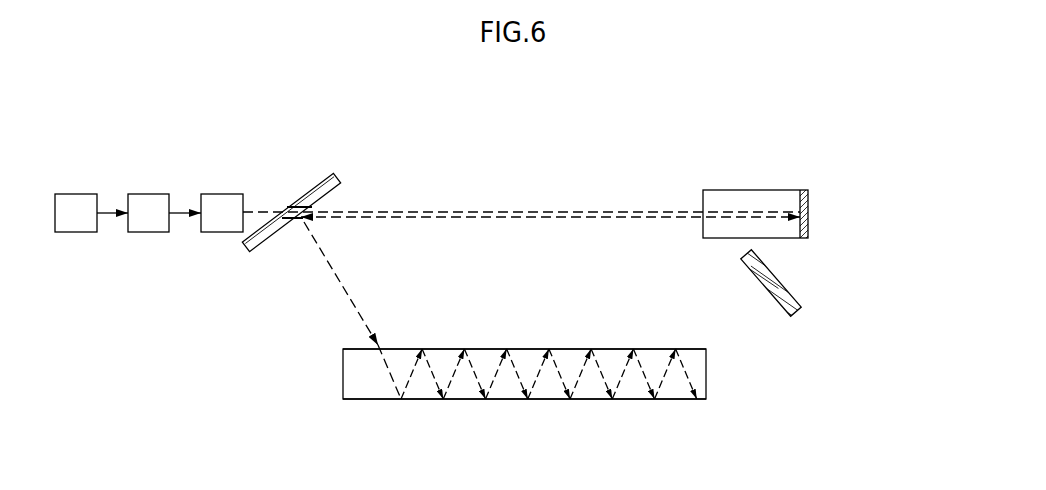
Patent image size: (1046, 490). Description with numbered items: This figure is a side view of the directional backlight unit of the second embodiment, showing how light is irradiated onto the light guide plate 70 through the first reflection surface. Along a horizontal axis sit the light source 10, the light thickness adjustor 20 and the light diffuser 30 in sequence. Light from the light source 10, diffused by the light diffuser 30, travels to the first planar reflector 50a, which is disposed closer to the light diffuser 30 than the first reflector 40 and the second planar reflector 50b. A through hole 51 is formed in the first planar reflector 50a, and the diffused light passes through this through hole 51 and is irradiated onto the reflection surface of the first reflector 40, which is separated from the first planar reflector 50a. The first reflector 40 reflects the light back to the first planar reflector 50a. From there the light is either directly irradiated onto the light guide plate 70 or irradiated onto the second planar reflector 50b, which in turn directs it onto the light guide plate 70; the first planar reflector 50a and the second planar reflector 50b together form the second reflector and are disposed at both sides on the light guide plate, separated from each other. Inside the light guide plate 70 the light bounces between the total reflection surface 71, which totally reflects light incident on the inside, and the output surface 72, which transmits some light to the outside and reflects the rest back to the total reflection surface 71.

The light source 10 is at (74, 198).
The light thickness adjustor 20 is at (150, 198).
The light diffuser 30 is at (220, 198).
The first reflector 40 is at (808, 190).
The first planar reflector 50a is at (330, 176).
The second planar reflector 50b is at (790, 287).
The through hole 51 is at (290, 205).
The light guide plate 70 is at (699, 377).
The total reflection surface 71 is at (520, 348).
The output surface 72 is at (510, 400).